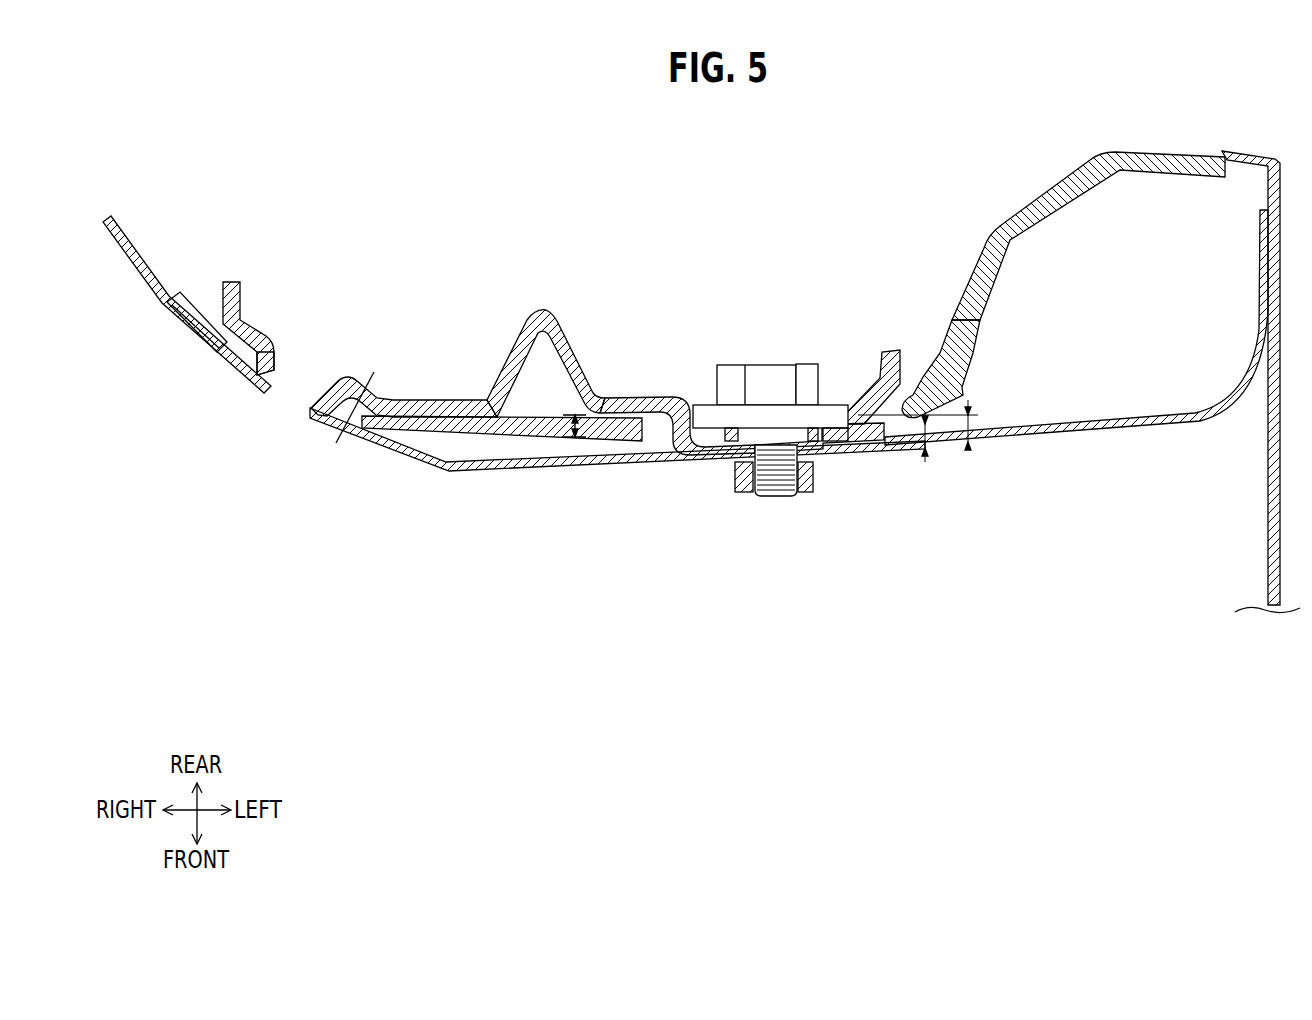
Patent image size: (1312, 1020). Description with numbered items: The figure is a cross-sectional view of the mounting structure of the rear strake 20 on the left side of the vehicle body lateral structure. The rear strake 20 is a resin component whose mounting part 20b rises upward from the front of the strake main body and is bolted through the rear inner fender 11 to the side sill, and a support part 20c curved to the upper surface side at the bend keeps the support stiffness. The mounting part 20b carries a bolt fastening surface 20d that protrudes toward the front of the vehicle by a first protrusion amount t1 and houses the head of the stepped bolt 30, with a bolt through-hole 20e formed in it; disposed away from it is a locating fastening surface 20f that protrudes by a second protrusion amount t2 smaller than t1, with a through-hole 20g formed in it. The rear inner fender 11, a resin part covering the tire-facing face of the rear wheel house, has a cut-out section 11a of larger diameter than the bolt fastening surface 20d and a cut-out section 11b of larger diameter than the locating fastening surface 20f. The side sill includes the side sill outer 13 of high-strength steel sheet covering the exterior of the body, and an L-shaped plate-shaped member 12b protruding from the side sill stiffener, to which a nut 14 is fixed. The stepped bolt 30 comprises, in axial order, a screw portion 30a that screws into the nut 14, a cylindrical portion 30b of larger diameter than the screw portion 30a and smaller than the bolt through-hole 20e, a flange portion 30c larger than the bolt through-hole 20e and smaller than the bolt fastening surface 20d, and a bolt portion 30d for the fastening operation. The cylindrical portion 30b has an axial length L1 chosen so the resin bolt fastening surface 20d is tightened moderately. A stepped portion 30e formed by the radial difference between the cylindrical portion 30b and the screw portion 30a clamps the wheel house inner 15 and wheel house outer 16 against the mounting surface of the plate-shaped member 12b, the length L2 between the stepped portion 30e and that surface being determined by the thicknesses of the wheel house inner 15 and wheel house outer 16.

The rear inner fender 11 is at (1038, 198).
The cut-out section 11a is at (905, 410).
The cut-out section 11b is at (240, 352).
The plate-shaped member 12b is at (713, 463).
The side sill outer 13 is at (1265, 566).
The nut 14 is at (748, 493).
The wheel house inner 15 is at (124, 247).
The wheel house outer 16 is at (1120, 431).
The rear strake 20 is at (525, 278).
The mounting part 20b is at (642, 396).
The support part 20c is at (540, 315).
The bolt fastening surface 20d is at (866, 392).
The bolt through-hole 20e is at (815, 452).
The locating fastening surface 20f is at (250, 336).
The through-hole 20g is at (278, 372).
The stepped bolt 30 is at (877, 267).
The screw portion 30a is at (775, 435).
The cylindrical portion 30b is at (803, 393).
The flange portion 30c is at (836, 437).
The bolt portion 30d is at (730, 380).
The stepped portion 30e is at (707, 437).
The axial length L1 is at (969, 425).
The length L2 is at (932, 452).
The first protrusion amount t1 is at (566, 440).
The second protrusion amount t2 is at (352, 415).